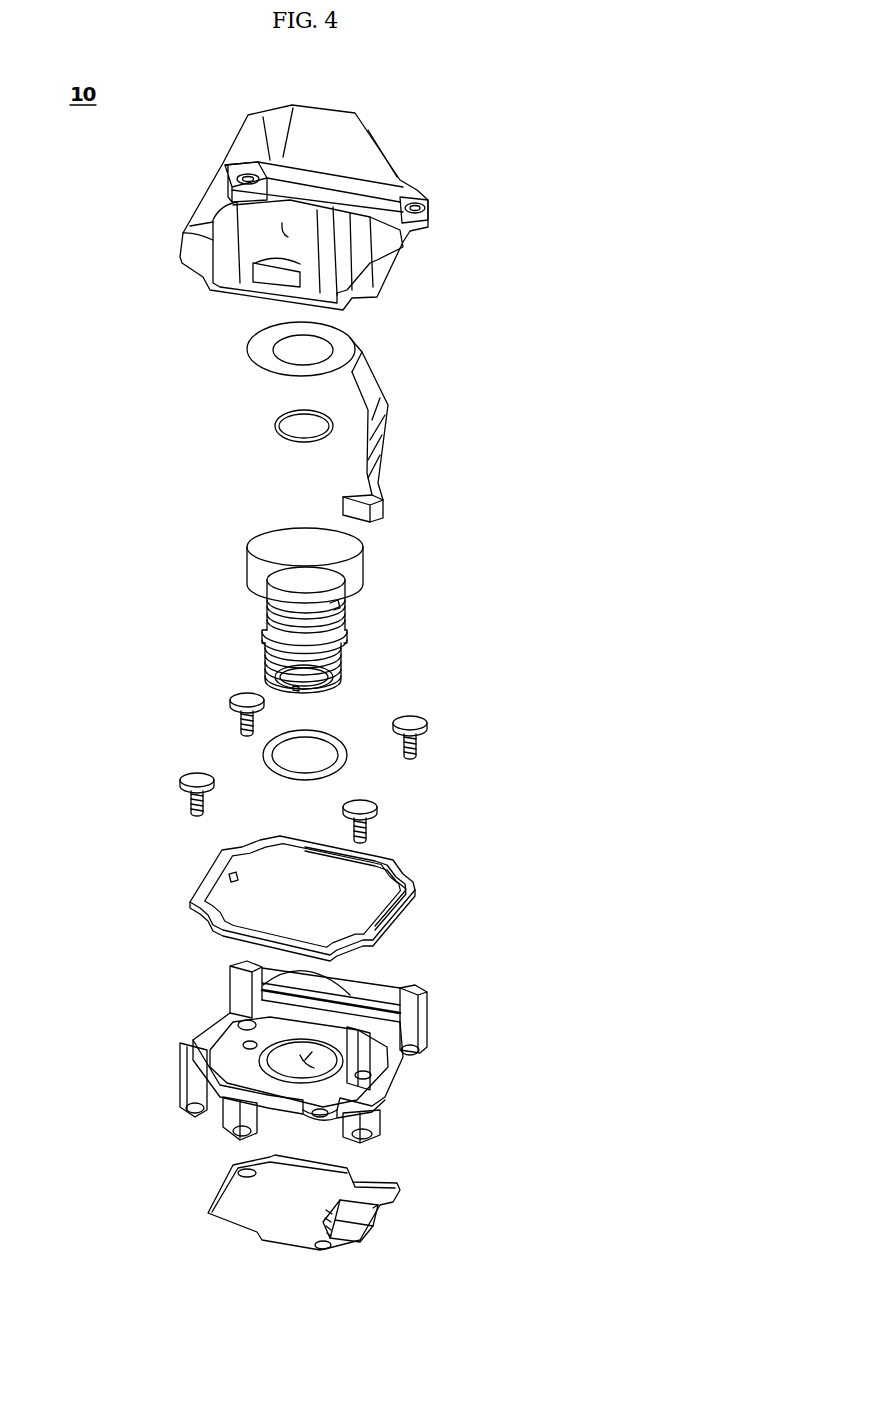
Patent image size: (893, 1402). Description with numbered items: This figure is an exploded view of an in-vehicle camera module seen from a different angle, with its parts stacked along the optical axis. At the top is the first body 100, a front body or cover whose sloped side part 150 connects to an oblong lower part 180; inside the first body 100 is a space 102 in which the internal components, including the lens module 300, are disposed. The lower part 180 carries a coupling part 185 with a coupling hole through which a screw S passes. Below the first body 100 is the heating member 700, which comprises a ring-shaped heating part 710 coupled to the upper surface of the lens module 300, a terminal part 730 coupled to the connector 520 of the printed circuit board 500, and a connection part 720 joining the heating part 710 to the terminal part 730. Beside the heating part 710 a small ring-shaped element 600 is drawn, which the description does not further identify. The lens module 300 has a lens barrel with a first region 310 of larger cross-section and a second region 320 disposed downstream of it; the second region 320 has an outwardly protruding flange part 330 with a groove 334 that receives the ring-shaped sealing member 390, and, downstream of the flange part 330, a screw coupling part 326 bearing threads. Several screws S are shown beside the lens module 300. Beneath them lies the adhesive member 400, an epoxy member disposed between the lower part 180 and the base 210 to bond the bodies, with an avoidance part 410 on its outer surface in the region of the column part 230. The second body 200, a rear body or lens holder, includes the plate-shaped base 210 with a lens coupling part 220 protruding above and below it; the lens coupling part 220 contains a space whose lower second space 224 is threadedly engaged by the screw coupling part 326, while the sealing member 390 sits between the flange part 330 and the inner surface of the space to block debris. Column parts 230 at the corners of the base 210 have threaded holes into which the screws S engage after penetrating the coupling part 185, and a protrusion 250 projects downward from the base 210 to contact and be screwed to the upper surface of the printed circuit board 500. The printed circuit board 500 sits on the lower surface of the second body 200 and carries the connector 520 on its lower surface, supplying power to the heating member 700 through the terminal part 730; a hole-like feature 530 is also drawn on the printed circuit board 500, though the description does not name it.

The first body 100 is at (354, 204).
The space 102 is at (278, 228).
The side part 150 is at (347, 148).
The lower part 180 is at (403, 262).
The coupling part 185 is at (428, 190).
The second body 200 is at (255, 1034).
The base 210 is at (363, 1005).
The lens coupling part 220 is at (230, 966).
The second space 224 is at (383, 1077).
The column part 230 is at (418, 993).
The protrusion 250 is at (207, 1027).
The lens module 300 is at (259, 609).
The first region 310 is at (352, 560).
The second region 320 is at (283, 638).
The screw coupling part 326 is at (340, 660).
The flange part 330 is at (252, 622).
The groove 334 is at (330, 608).
The sealing member 390 is at (262, 752).
The adhesive member 400 is at (269, 895).
The avoidance part 410 is at (403, 868).
The printed circuit board 500 is at (284, 1205).
The connector 520 is at (362, 1230).
The substrate hole 530 is at (247, 1173).
The O-ring 600 is at (275, 427).
The heating member 700 is at (389, 420).
The heating part 710 is at (350, 340).
The connection part 720 is at (385, 407).
The terminal part 730 is at (402, 482).
The screw S is at (418, 738).